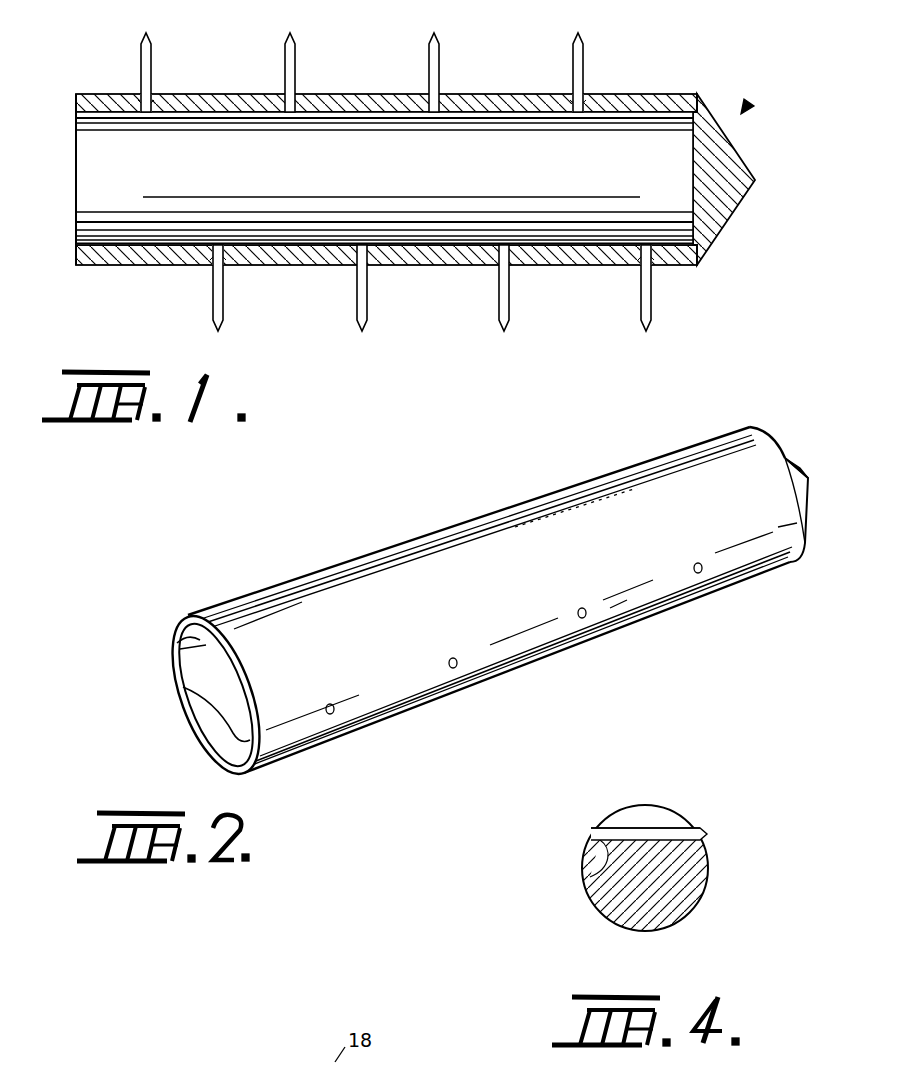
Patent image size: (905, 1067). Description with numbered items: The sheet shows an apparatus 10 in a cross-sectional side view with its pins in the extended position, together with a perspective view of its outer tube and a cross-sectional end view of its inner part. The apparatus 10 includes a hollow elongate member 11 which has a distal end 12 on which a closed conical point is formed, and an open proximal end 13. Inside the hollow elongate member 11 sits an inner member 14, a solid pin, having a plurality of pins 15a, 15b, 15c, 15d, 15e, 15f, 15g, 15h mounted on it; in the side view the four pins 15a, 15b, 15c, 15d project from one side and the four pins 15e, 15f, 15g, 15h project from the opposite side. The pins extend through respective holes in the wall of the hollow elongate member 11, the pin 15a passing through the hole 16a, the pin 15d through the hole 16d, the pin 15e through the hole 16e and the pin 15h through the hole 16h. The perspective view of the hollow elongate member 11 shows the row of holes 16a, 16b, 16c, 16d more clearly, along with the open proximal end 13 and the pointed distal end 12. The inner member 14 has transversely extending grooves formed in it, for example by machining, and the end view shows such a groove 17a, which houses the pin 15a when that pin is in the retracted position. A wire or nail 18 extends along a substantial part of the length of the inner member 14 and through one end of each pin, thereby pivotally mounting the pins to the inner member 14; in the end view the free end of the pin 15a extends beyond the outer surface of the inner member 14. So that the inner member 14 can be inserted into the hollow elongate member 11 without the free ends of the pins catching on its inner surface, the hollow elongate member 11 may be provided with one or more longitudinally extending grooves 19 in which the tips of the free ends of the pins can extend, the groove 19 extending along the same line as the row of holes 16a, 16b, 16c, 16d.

In FIG. 1, the apparatus 10 is at (746, 104).
In FIG. 1, the hollow elongate member 11 is at (127, 256).
In FIG. 2, the hollow elongate member 11 is at (434, 562).
In FIG. 1, the distal end 12 is at (718, 225).
In FIG. 2, the distal end 12 is at (788, 457).
In FIG. 1, the open proximal end 13 is at (75, 108).
In FIG. 2, the open proximal end 13 is at (189, 727).
In FIG. 1, the inner member 14 is at (566, 181).
In FIG. 4, the inner member 14 is at (687, 900).
In FIG. 1, the pin 15a is at (148, 72).
In FIG. 4, the pin 15a is at (690, 833).
In FIG. 1, the pin 15b is at (292, 62).
In FIG. 1, the pin 15c is at (437, 62).
In FIG. 1, the pin 15d is at (581, 60).
In FIG. 1, the pin 15e is at (224, 283).
In FIG. 1, the pin 15f is at (366, 293).
In FIG. 1, the pin 15g is at (509, 300).
In FIG. 1, the pin 15h is at (651, 303).
In FIG. 1, the hole 16a is at (105, 104).
In FIG. 2, the hole 16a is at (335, 713).
In FIG. 2, the hole 16b is at (457, 667).
In FIG. 2, the hole 16c is at (586, 617).
In FIG. 1, the hole 16d is at (604, 102).
In FIG. 2, the hole 16d is at (702, 572).
In FIG. 1, the hole 16e is at (203, 260).
In FIG. 1, the hole 16h is at (665, 270).
In FIG. 4, the transversely extending groove 17a is at (625, 820).
In FIG. 4, the wire or nail 18 is at (590, 875).
In FIG. 2, the longitudinally extending groove 19 is at (180, 700).